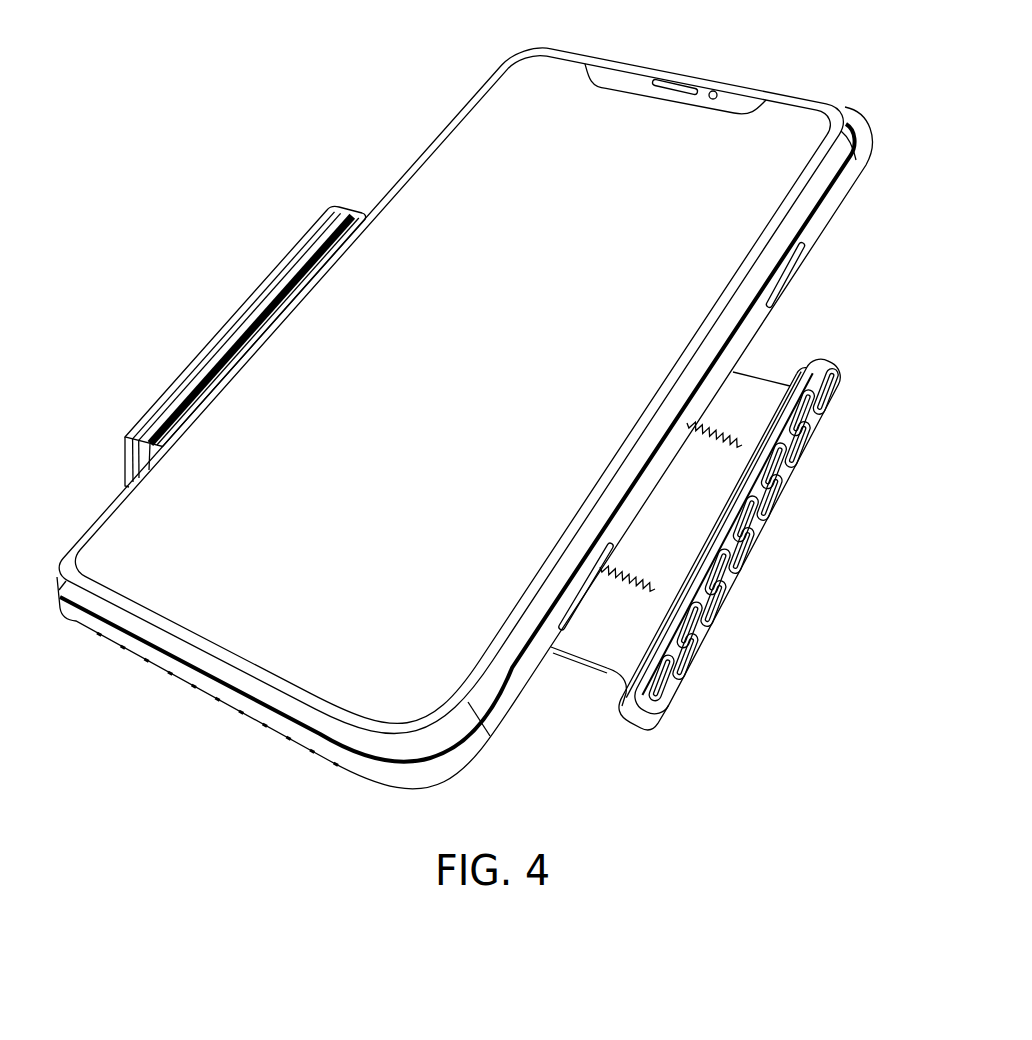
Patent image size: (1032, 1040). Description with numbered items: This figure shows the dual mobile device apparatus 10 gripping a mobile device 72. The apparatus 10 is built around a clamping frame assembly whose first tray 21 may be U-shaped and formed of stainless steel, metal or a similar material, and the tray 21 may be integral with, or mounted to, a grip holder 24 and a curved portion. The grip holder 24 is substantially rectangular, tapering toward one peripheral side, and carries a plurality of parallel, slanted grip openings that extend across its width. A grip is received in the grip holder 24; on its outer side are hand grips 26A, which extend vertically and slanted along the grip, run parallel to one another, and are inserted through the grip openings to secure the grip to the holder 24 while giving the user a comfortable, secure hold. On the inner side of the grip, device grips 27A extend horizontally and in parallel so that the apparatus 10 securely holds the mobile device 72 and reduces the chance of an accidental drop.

The dual mobile device apparatus 10 is at (418, 58).
The mobile device 72 is at (797, 127).
The grip holder 24 is at (280, 262).
The device grips 27A is at (150, 418).
The first tray 21 is at (766, 383).
The hand grips 26A is at (745, 525).